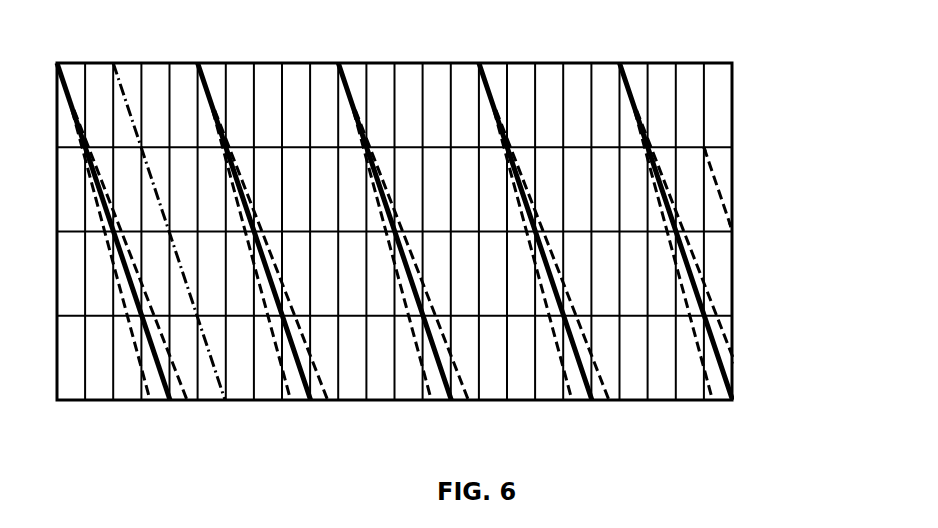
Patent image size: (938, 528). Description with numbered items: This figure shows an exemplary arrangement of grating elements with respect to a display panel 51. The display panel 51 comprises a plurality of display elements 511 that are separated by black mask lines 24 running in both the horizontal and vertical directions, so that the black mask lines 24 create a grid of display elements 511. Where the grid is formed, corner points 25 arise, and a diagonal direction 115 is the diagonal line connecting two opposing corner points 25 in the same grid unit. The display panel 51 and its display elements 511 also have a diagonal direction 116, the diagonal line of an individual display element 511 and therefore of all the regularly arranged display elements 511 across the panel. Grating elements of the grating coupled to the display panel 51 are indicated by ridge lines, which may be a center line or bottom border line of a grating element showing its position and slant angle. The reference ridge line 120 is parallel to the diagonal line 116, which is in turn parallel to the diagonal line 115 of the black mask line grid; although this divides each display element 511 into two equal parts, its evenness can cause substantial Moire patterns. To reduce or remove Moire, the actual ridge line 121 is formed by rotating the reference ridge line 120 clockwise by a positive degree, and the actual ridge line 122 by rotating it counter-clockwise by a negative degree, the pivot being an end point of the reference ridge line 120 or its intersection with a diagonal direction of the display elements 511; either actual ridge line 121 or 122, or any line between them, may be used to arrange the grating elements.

The black mask lines 24 is at (675, 107).
The corner points 25 is at (705, 148).
The display panel 51 is at (365, 63).
The display element 511 is at (547, 107).
The diagonal direction 115 is at (717, 185).
The diagonal direction 116 is at (127, 103).
The reference ridge line 120 is at (160, 387).
The actual ridge line 121 is at (147, 388).
The actual ridge line 122 is at (177, 383).